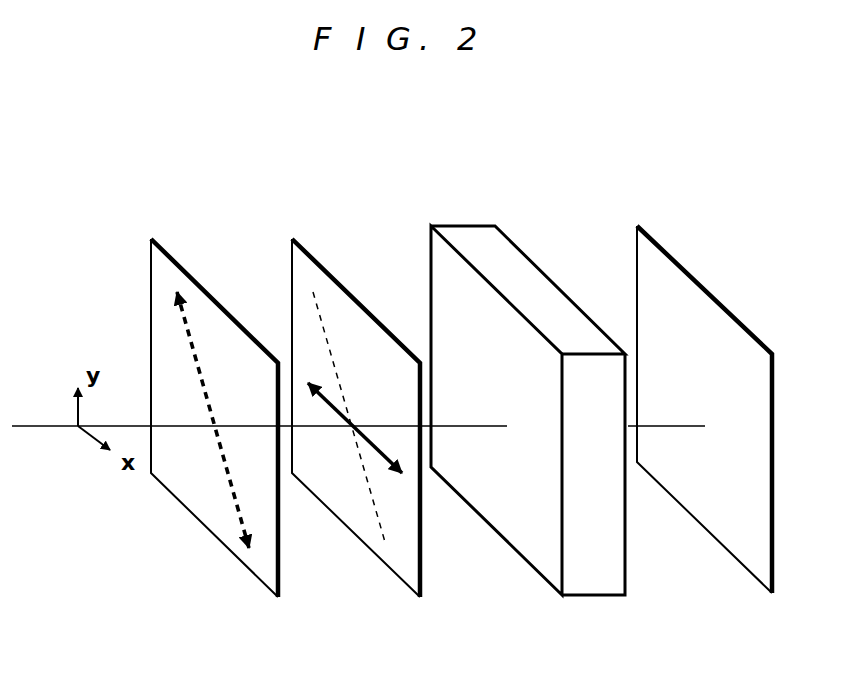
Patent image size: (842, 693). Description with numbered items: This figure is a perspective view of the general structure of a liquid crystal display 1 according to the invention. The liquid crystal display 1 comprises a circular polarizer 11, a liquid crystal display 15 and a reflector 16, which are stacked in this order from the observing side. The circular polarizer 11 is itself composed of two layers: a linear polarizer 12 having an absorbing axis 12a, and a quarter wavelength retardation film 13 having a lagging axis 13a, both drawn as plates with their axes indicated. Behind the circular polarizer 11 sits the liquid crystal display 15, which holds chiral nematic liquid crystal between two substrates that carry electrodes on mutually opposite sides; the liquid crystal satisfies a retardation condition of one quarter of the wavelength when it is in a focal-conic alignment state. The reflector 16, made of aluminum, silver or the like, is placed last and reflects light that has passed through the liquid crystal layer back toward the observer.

The liquid crystal display 1 is at (65, 213).
The circular polarizer 11 is at (393, 210).
The linear polarizer 12 is at (194, 405).
The absorbing axis 12a is at (222, 458).
The quarter wavelength retardation film 13 is at (356, 405).
The lagging axis 13a is at (372, 440).
The liquid crystal display 15 is at (502, 257).
The reflector 16 is at (665, 248).